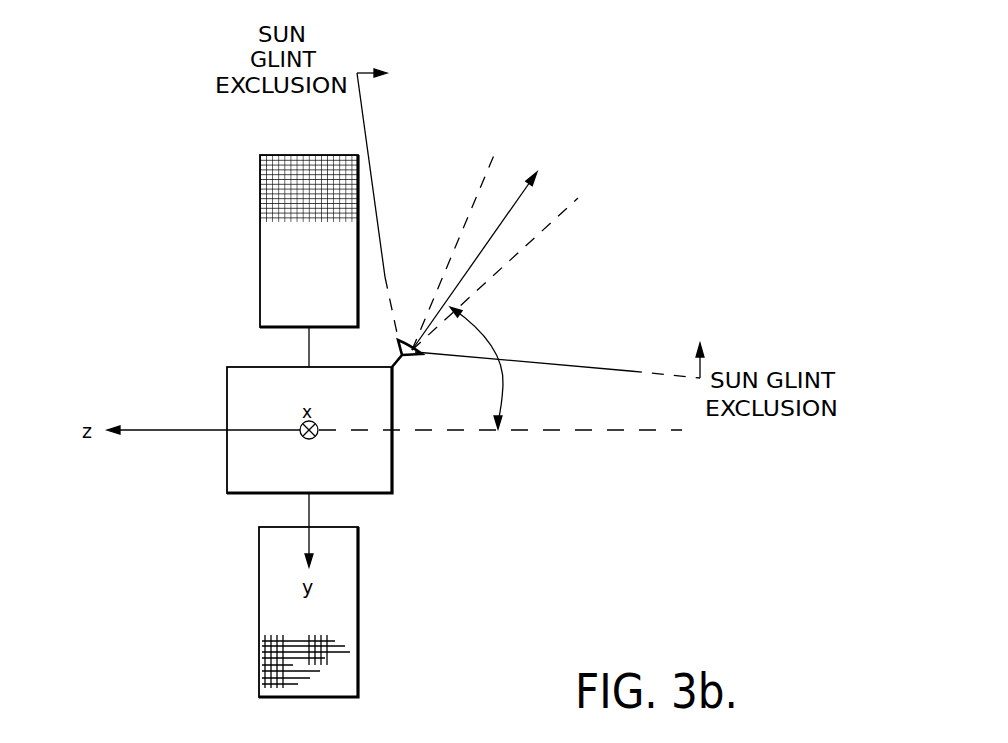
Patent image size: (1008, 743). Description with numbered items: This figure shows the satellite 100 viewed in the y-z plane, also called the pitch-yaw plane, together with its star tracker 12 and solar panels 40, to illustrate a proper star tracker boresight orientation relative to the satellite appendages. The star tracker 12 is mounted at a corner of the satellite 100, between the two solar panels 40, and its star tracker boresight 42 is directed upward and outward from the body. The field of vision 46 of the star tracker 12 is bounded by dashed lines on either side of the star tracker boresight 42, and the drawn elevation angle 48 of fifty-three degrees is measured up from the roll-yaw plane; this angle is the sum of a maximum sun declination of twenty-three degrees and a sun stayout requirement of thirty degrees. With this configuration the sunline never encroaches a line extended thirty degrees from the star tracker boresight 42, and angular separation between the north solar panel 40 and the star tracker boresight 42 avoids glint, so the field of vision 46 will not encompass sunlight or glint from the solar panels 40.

The star tracker 12 is at (399, 366).
The solar panels 40 is at (260, 200).
The star tracker boresight 42 is at (484, 232).
The field of vision 46 is at (462, 216).
The boresight angle 48 is at (470, 315).
The satellite 100 is at (227, 491).